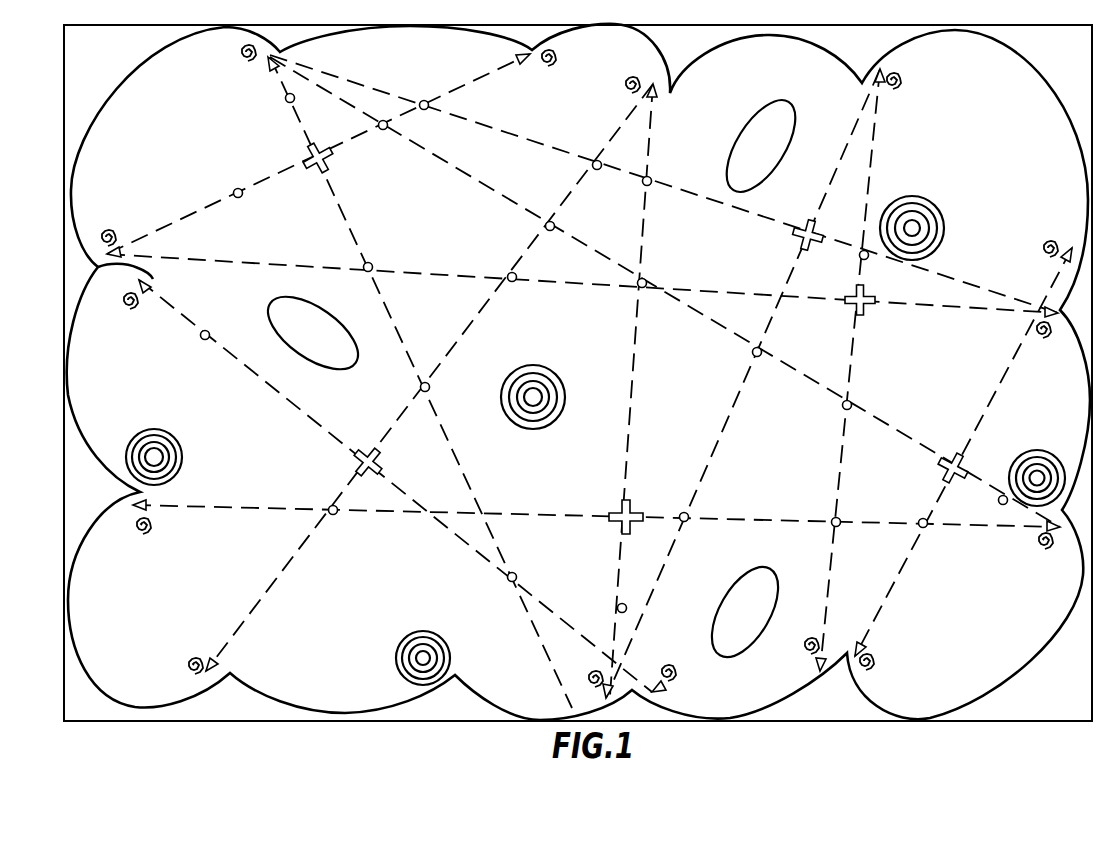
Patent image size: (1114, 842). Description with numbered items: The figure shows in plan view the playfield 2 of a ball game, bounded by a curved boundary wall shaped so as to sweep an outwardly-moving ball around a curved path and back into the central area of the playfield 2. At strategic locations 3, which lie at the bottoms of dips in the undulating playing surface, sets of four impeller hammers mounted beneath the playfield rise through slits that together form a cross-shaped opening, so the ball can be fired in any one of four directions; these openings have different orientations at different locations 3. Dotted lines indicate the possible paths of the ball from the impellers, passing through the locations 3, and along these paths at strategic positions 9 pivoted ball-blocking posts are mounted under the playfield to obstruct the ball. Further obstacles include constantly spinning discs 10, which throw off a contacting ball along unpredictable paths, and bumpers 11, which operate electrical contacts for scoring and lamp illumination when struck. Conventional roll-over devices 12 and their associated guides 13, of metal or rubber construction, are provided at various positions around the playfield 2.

The playfield 2 is at (599, 333).
The strategic locations 3 is at (808, 226).
The strategic positions 9 is at (758, 358).
The constantly spinning discs 10 is at (943, 218).
The bumpers 11 is at (323, 307).
The roll-over devices 12 is at (520, 60).
The guides 13 is at (628, 86).